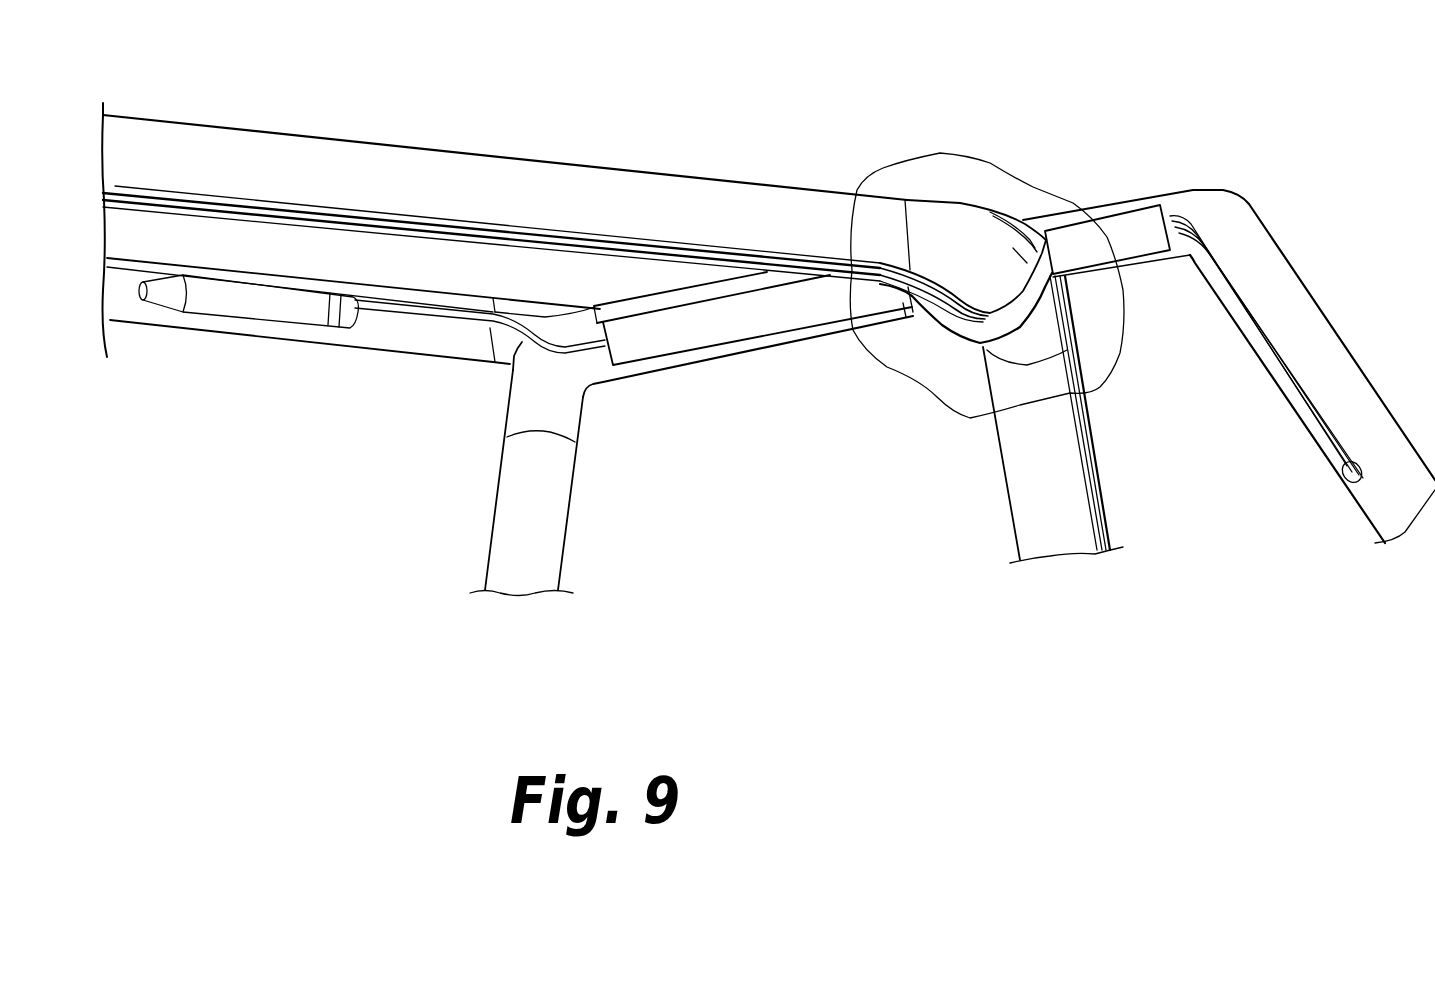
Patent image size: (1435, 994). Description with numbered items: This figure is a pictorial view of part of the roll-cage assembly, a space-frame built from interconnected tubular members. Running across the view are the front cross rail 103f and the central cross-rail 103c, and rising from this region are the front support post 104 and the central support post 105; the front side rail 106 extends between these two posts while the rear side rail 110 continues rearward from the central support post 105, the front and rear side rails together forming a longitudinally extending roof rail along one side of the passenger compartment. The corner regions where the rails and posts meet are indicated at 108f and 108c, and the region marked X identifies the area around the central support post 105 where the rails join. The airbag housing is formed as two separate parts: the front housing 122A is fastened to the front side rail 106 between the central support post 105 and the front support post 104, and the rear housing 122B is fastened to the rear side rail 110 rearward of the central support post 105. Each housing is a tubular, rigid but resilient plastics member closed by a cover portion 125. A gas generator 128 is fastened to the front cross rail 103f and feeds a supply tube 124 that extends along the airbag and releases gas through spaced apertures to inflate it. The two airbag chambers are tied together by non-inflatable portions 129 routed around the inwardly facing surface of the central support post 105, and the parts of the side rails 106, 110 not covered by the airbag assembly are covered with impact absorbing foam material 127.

The central cross-rail 103c is at (522, 155).
The front cross rail 103f is at (190, 333).
The front support post 104 is at (493, 493).
The central support post 105 is at (1100, 487).
The front side rail 106 is at (743, 365).
The rear corner joint 108c is at (963, 223).
The front corner joint 108f is at (587, 398).
The rear side rail 110 is at (1197, 183).
The front housing 122A is at (818, 355).
The rear housing 122B is at (1142, 207).
The supply tube 124 is at (410, 316).
The cover portion 125 is at (678, 365).
The impact absorbing foam material 127 is at (1252, 202).
The gas generator 128 is at (262, 307).
The non-inflatable portion 129 is at (973, 347).
The detail region X is at (1118, 378).